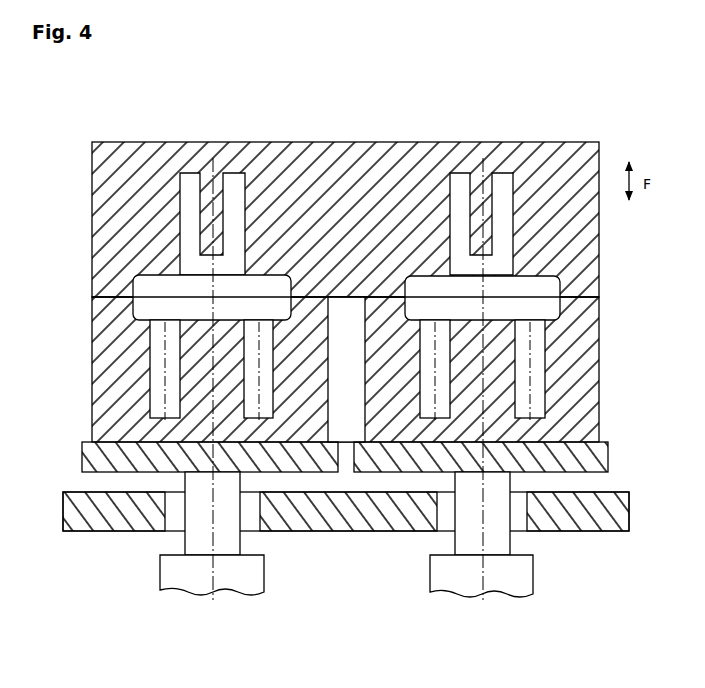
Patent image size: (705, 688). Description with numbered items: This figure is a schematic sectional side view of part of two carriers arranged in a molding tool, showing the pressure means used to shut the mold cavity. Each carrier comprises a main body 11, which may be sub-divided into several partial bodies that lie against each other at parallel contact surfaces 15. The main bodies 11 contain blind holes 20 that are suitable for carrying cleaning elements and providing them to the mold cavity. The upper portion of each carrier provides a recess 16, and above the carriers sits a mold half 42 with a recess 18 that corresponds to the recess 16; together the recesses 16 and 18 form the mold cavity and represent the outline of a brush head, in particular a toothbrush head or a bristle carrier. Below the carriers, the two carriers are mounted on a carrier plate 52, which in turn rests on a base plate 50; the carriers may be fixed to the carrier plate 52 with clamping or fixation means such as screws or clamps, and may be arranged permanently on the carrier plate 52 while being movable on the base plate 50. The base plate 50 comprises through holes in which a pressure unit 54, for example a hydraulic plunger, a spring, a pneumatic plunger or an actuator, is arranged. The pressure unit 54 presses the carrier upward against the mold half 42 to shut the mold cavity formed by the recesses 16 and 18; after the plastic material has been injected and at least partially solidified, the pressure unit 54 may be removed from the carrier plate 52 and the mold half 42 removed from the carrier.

The mold half 42 is at (363, 170).
The main body 11 is at (555, 388).
The contact surfaces 15 is at (603, 299).
The recess 18 is at (503, 198).
The recess 16 is at (158, 315).
The blind hole 20 is at (162, 367).
The carrier plate 52 is at (378, 457).
The base plate 50 is at (332, 510).
The pressure unit 54 is at (498, 538).